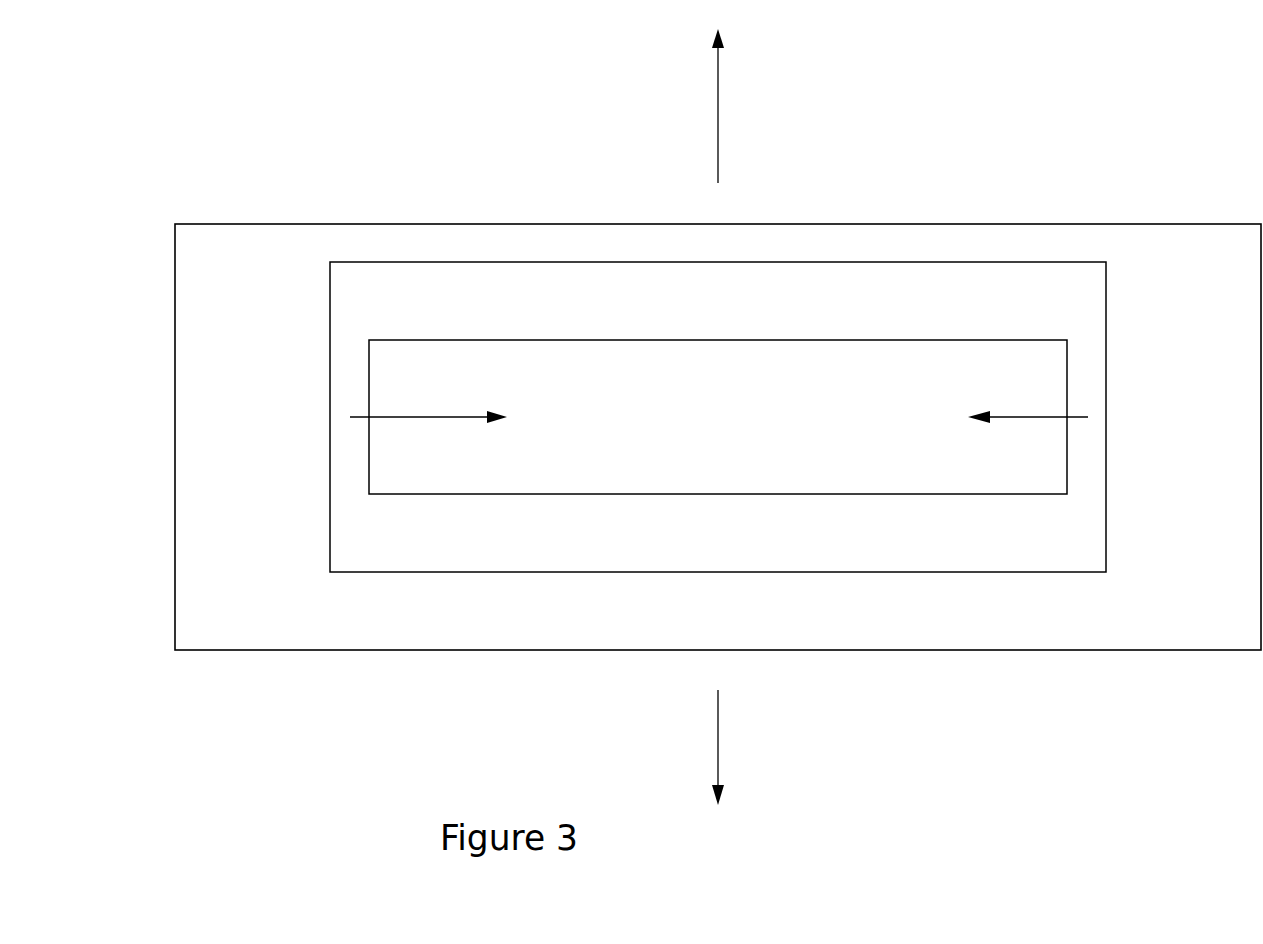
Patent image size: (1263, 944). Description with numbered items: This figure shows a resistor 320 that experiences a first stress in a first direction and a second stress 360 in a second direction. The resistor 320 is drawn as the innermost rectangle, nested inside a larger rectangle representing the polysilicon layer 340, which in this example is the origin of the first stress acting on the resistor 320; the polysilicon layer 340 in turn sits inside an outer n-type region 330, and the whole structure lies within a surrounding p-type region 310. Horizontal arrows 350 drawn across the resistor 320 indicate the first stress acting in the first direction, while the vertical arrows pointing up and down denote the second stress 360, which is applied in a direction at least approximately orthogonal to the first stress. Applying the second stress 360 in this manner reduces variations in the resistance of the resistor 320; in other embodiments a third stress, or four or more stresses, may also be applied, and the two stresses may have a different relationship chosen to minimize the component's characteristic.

The p-type region (substrate) 310 is at (1231, 148).
The resistor 320 is at (718, 419).
The n-type region 330 is at (718, 437).
The polysilicon layer 340 is at (718, 418).
The lateral field direction arrows 350 is at (719, 393).
The second stress 360 is at (745, 417).